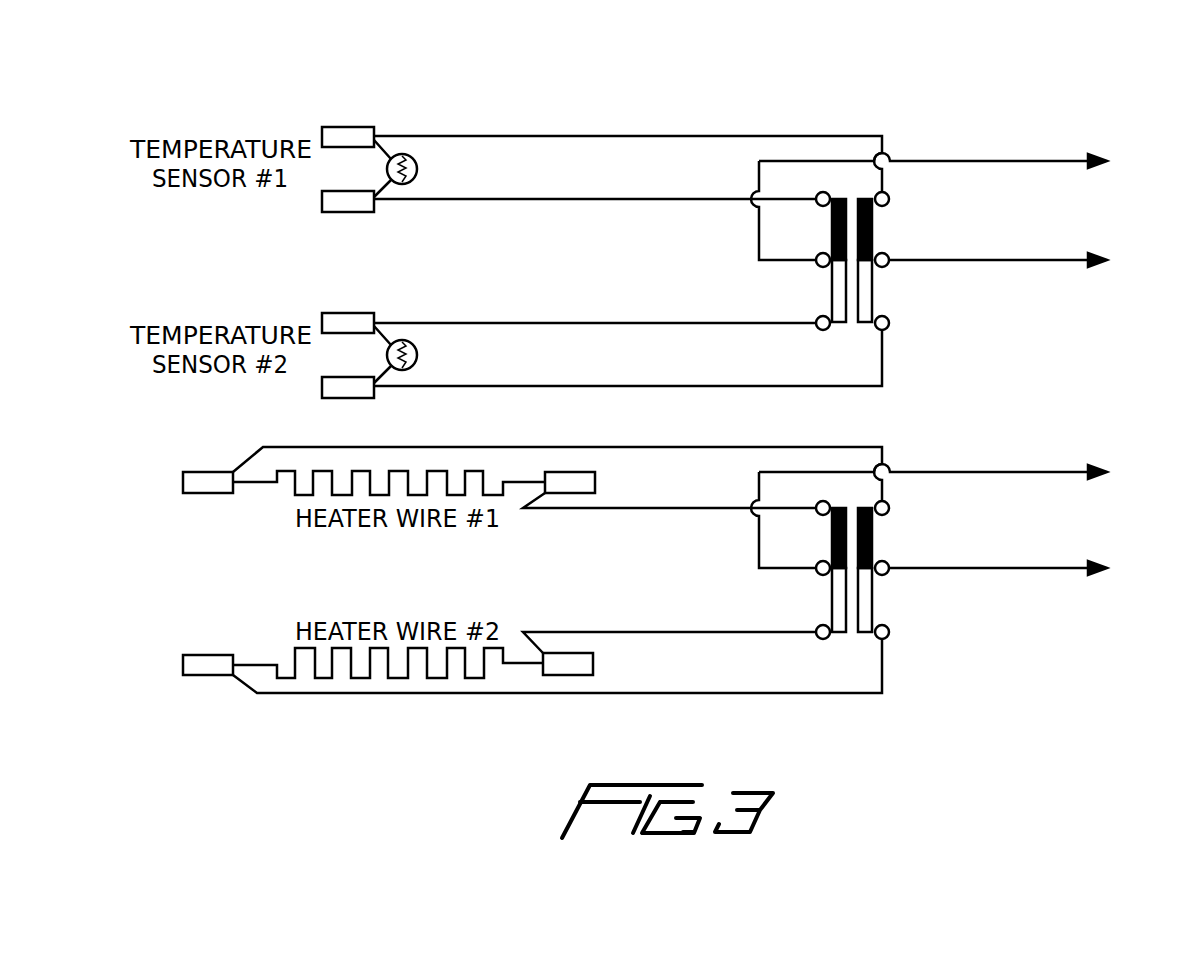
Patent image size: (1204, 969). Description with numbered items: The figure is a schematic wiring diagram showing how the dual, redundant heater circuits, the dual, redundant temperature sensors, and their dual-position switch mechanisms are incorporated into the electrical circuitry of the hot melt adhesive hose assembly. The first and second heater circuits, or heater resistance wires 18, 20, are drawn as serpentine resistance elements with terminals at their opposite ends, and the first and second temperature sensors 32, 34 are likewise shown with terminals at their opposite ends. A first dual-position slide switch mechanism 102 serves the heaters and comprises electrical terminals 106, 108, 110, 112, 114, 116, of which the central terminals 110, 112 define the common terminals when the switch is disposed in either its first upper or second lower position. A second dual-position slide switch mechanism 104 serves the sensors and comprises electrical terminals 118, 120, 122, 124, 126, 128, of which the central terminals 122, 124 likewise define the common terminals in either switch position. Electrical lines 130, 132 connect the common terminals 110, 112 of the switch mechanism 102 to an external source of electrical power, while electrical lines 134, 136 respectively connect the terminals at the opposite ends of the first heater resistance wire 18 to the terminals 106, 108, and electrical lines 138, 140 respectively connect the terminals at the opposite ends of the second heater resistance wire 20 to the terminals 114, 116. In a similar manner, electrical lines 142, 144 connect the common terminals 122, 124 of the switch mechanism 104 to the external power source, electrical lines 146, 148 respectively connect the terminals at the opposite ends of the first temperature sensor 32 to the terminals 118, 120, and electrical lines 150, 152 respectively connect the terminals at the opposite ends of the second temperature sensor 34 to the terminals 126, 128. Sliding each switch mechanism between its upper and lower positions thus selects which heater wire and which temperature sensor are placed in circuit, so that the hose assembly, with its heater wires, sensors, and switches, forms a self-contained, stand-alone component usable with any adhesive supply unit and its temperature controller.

The first heater resistance wire 18 is at (272, 482).
The second heater resistance wire 20 is at (262, 655).
The first temperature sensor 32 is at (405, 154).
The second temperature sensor 34 is at (395, 340).
The first dual-position slide switch mechanism 102 is at (925, 618).
The second dual-position slide switch mechanism 104 is at (905, 295).
The electrical terminal 106 is at (818, 512).
The electrical terminal 108 is at (889, 504).
The common terminal 110 is at (818, 572).
The common terminal 112 is at (890, 574).
The electrical terminal 114 is at (818, 635).
The electrical terminal 116 is at (885, 642).
The electrical terminal 118 is at (820, 192).
The electrical terminal 120 is at (888, 194).
The common terminal 122 is at (818, 265).
The common terminal 124 is at (890, 258).
The electrical terminal 126 is at (818, 325).
The electrical terminal 128 is at (890, 327).
The electrical line 130 is at (1045, 472).
The electrical line 132 is at (1075, 568).
The electrical line 134 is at (670, 508).
The electrical line 136 is at (522, 447).
The electrical line 138 is at (590, 632).
The electrical line 140 is at (545, 693).
The electrical line 142 is at (1052, 158).
The electrical line 144 is at (1075, 260).
The electrical line 146 is at (675, 199).
The electrical line 148 is at (620, 136).
The electrical line 150 is at (550, 323).
The electrical line 152 is at (600, 386).